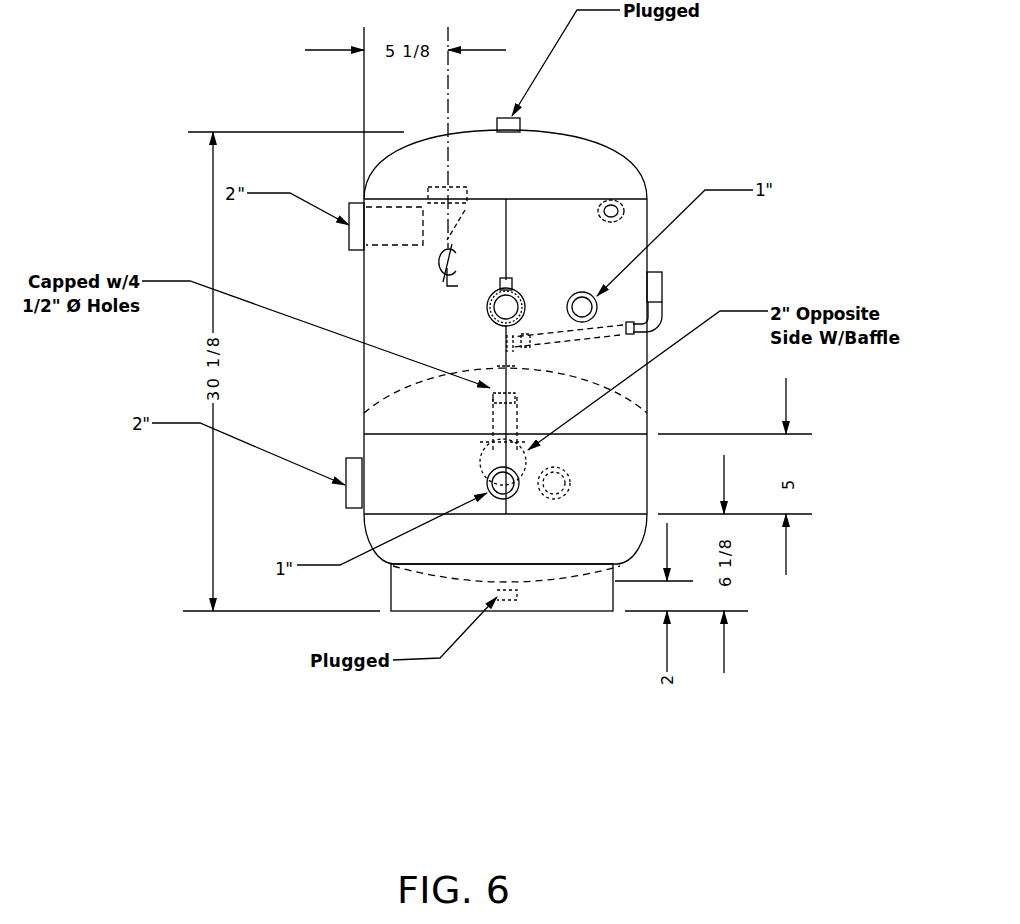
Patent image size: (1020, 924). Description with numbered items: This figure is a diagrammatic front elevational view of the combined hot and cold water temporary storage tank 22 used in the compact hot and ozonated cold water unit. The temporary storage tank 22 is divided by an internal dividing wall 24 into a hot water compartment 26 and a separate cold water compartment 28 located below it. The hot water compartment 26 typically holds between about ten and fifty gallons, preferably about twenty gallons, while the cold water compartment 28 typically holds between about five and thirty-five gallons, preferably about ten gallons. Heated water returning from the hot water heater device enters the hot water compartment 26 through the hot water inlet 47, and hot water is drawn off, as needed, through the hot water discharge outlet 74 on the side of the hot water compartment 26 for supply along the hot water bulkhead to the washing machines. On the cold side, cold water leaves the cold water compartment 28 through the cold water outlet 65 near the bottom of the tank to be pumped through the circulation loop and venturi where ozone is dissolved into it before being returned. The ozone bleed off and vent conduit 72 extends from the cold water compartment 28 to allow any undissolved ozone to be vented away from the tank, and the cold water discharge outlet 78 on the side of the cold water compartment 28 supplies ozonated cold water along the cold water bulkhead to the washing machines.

The combined hot and cold water temporary storage tank 22 is at (644, 163).
The internal dividing wall 24 is at (398, 385).
The hot water compartment 26 is at (421, 314).
The cold water compartment 28 is at (459, 427).
The hot water inlet 47 is at (591, 300).
The cold water outlet 65 is at (520, 487).
The ozone bleed off and vent conduit 72 is at (668, 297).
The hot water discharge outlet 74 is at (364, 200).
The cold water discharge outlet 78 is at (346, 505).